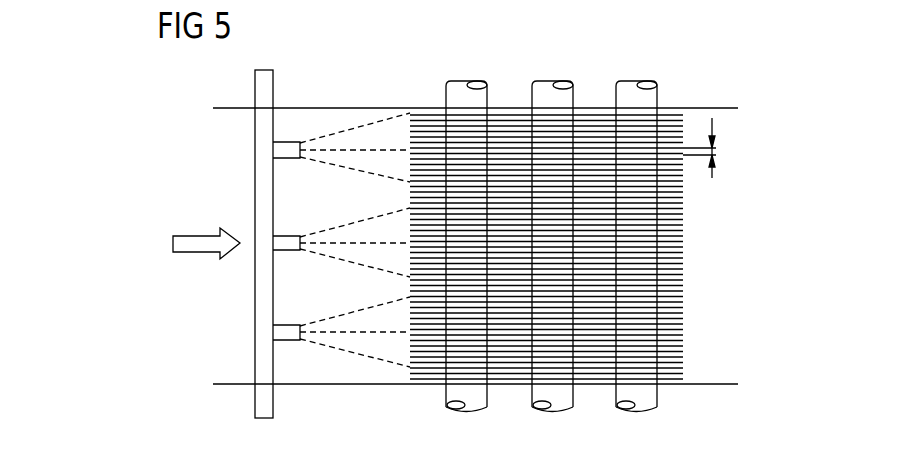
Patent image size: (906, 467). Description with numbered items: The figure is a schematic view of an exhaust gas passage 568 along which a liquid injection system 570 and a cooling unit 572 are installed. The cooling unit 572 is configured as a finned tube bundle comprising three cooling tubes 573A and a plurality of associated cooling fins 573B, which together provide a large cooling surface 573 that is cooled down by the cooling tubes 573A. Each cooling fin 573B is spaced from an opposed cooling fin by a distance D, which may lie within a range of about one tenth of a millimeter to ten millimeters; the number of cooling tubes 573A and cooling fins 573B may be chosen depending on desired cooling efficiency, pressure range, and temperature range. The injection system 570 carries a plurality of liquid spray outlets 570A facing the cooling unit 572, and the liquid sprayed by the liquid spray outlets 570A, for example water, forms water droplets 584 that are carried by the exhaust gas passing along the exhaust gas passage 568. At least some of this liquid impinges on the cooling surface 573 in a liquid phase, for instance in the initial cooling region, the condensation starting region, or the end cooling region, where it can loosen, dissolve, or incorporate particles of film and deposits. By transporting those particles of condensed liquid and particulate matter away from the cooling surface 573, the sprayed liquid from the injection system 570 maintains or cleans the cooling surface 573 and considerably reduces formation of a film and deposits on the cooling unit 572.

The injection system 570 is at (226, 147).
The liquid spray outlet 570A is at (287, 145).
The water droplets 584 is at (348, 170).
The exhaust gas passage 568 is at (402, 317).
The cooling surface 573 is at (646, 240).
The cooling tubes 573A is at (465, 100).
The cooling fins 573B is at (678, 352).
The cooling unit 572 is at (712, 188).
The distance D is at (718, 142).